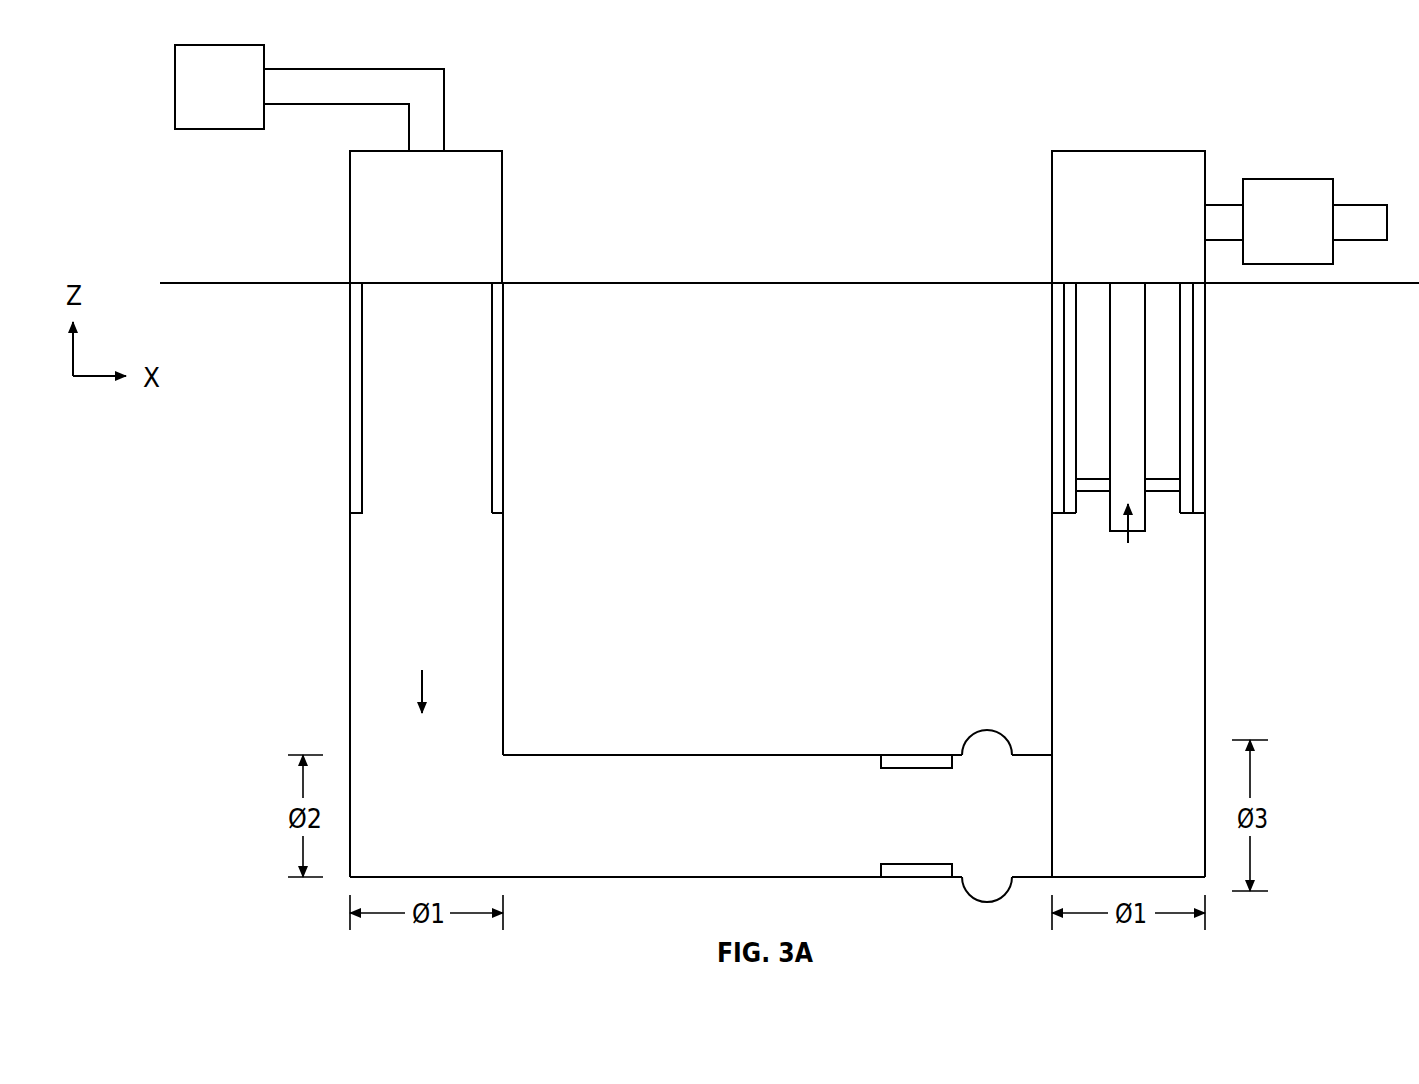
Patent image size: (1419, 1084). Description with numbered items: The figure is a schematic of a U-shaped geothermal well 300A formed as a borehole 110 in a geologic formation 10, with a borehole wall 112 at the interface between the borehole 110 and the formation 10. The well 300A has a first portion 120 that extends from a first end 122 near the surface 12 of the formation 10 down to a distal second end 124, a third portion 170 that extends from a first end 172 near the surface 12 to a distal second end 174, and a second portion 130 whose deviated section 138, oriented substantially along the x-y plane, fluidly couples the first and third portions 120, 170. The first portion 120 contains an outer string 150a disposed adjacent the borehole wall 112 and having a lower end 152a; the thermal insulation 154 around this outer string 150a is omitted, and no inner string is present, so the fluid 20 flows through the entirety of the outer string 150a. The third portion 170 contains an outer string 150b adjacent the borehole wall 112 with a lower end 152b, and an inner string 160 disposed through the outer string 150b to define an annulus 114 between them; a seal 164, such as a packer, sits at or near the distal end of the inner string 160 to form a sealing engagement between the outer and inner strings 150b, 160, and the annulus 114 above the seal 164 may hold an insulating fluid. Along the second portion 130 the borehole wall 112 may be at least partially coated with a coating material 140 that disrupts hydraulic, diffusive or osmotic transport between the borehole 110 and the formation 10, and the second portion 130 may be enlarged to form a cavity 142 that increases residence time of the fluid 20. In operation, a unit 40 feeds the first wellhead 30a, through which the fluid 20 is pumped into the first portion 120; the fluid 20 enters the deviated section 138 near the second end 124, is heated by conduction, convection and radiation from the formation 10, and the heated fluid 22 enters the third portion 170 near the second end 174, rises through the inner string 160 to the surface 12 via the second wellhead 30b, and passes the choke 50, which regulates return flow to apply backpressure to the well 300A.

The U-shaped geothermal well 300A is at (765, 155).
The geologic formation 10 is at (877, 470).
The surface 12 is at (860, 283).
The fluid 20 is at (423, 695).
The heated fluid 22 is at (1128, 513).
The first wellhead 30a is at (426, 217).
The second wellhead 30b is at (1128, 217).
The pump / injection unit 40 is at (309, 98).
The choke 50 is at (1296, 221).
The borehole 110 is at (530, 695).
The borehole wall 112 is at (1207, 673).
The annulus 114 is at (1173, 460).
The first portion 120 is at (383, 587).
The first end 122 is at (423, 283).
The second end 124 is at (396, 877).
The second portion 130 is at (640, 852).
The deviated section 138 is at (789, 818).
The coating material 140 is at (900, 762).
The cavity 142 is at (985, 740).
The outer string 150a is at (498, 468).
The outer string 150b is at (1188, 407).
The lower end 152a is at (497, 513).
The lower end 152b is at (1186, 515).
The thermal insulation 154 is at (1198, 335).
The inner string 160 is at (1133, 382).
The seal 164 is at (1095, 495).
The third portion 170 is at (1177, 698).
The first end 172 is at (1123, 283).
The second end 174 is at (1123, 877).